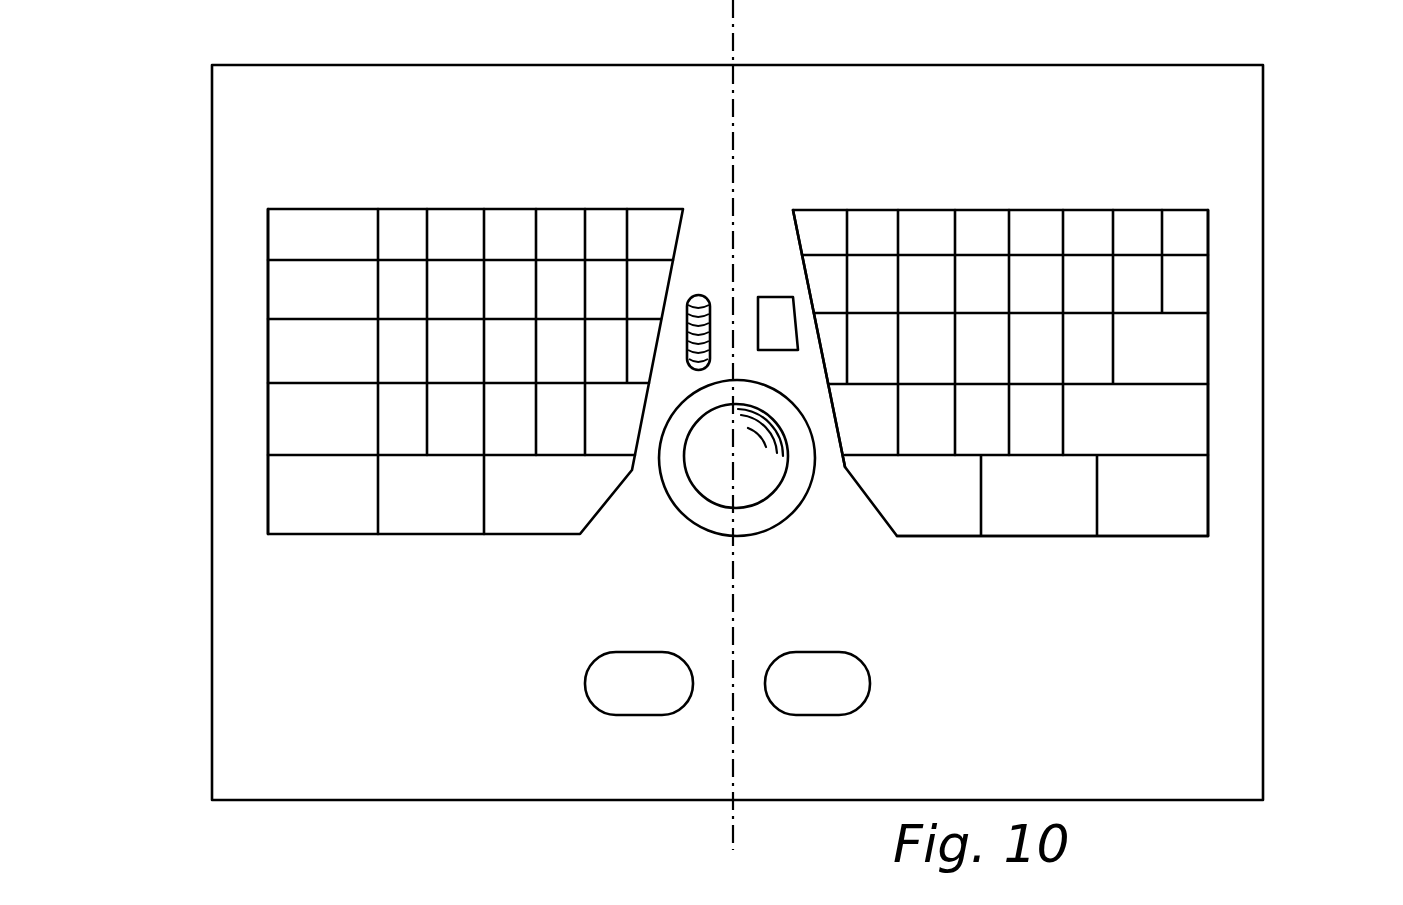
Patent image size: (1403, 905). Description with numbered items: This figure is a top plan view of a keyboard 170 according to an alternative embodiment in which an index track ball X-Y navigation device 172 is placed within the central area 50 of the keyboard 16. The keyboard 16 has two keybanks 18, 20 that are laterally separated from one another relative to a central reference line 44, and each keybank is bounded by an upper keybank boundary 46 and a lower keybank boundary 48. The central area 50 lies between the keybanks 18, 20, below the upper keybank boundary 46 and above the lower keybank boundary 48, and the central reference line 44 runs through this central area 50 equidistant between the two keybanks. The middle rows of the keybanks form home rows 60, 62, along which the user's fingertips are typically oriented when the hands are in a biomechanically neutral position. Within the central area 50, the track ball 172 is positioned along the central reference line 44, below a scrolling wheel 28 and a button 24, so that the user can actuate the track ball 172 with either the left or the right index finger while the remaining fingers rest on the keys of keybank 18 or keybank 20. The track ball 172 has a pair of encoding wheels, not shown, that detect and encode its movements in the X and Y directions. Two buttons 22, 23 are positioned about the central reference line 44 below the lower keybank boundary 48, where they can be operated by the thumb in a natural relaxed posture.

The keyboard 170 is at (1328, 165).
The central reference line 44 is at (733, 52).
The keyboard 16 is at (666, 354).
The keybank 18 is at (310, 202).
The home row 60 is at (268, 348).
The lower keybank boundary 48 is at (365, 535).
The upper keybank boundary 46 is at (457, 208).
The keybank 20 is at (1053, 325).
The central area 50 is at (787, 247).
The home row 62 is at (1210, 327).
The scrolling wheel 28 is at (697, 294).
The button 24 is at (767, 296).
The index track ball X-Y navigation device 172 is at (773, 488).
The button 22 is at (604, 652).
The button 23 is at (866, 698).